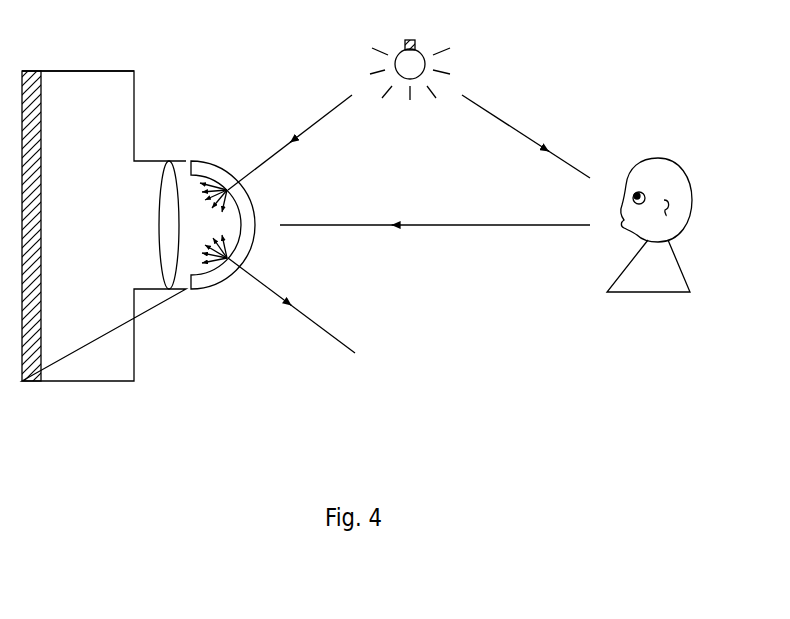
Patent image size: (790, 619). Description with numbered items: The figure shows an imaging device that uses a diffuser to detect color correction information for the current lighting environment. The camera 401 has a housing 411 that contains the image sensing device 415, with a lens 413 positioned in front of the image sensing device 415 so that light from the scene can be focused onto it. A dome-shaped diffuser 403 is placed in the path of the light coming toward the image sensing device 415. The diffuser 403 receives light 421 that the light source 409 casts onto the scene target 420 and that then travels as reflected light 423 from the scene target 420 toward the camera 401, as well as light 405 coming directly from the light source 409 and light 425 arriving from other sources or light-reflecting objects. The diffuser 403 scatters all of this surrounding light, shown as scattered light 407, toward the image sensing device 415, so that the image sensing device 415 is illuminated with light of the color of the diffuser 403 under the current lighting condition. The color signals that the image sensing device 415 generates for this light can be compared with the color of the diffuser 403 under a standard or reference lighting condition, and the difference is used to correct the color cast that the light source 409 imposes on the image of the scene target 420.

The camera 401 is at (114, 382).
The dome-shaped diffuser 403 is at (250, 202).
The light path from light source to diffuser 405 is at (313, 122).
The scattered light from diffuser 407 is at (216, 199).
The light source 409 is at (413, 40).
The camera housing 411 is at (75, 70).
The lens 413 is at (162, 263).
The image sensing device 415 is at (42, 142).
The scene target 420 is at (632, 165).
The light path from light source to target 421 is at (509, 124).
The light from the target scene 423 is at (473, 224).
The light from other sources 425 is at (328, 334).